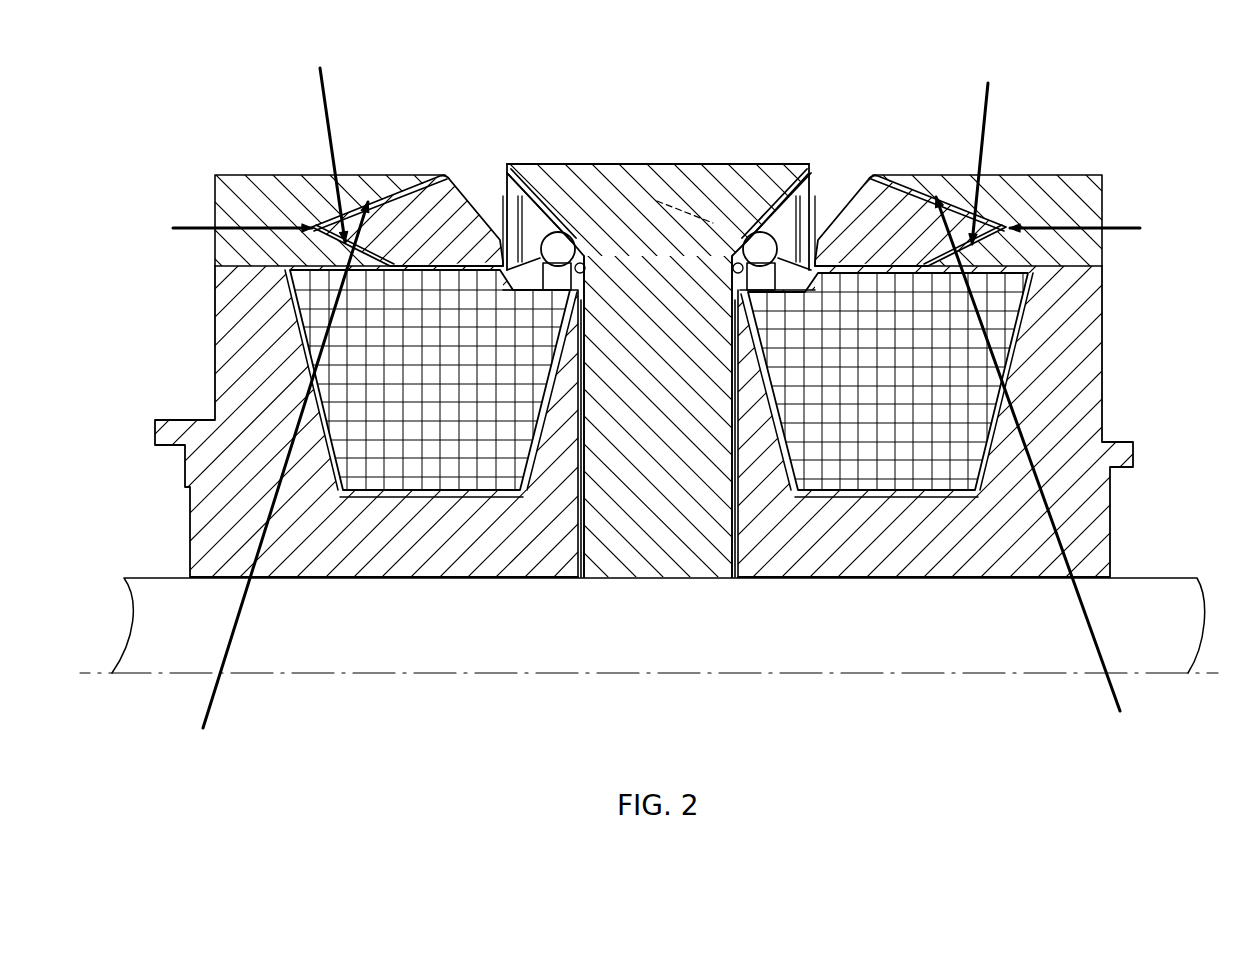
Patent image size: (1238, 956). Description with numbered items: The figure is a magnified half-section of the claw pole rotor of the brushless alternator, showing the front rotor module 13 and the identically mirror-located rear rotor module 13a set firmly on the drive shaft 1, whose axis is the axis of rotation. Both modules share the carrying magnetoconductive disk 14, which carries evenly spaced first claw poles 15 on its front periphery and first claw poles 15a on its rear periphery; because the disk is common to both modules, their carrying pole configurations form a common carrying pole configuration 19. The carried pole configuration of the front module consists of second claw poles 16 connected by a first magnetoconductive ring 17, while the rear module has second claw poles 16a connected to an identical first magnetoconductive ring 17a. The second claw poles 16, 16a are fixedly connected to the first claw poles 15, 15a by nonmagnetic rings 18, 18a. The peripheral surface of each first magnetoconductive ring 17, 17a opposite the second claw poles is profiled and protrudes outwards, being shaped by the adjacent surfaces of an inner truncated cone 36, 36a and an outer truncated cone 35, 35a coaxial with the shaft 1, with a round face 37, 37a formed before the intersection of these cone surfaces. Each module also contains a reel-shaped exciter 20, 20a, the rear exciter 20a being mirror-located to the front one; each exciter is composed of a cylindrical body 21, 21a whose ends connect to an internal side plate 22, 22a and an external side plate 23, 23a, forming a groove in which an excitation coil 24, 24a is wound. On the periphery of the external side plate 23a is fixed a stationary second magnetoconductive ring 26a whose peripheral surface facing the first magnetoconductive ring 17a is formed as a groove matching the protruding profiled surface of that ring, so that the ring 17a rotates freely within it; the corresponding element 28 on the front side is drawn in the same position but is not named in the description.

The drive shaft 1 is at (182, 620).
The front rotor module 13 is at (492, 203).
The rear rotor module 13a is at (825, 195).
The carrying magnetoconductive disk 14 is at (662, 243).
The first claw poles 15 is at (580, 210).
The first claw poles 15a is at (742, 203).
The second claw poles 16 is at (635, 233).
The second claw poles 16a is at (720, 223).
The first magnetoconductive ring 17 is at (435, 192).
The first magnetoconductive ring 17a is at (883, 190).
The nonmagnetic ring 18 is at (558, 250).
The nonmagnetic ring 18a is at (760, 250).
The common carrying pole configuration 19 is at (661, 250).
The exciter 20 is at (438, 393).
The exciter 20a is at (882, 405).
The cylindrical body 21 is at (427, 520).
The cylindrical body 21a is at (887, 518).
The internal side plate 22 is at (560, 412).
The internal side plate 22a is at (755, 415).
The external side plate 23 is at (265, 445).
The external side plate 23a is at (1057, 450).
The excitation coil 24 is at (363, 428).
The excitation coil 24a is at (952, 433).
The second magnetoconductive ring 26a is at (1062, 198).
The outer block 28 is at (256, 200).
The outer truncated cone 35 is at (203, 728).
The outer truncated cone 35a is at (1163, 711).
The inner truncated cone 36 is at (320, 68).
The inner truncated cone 36a is at (1022, 83).
The round face 37 is at (227, 229).
The round face 37a is at (1097, 229).